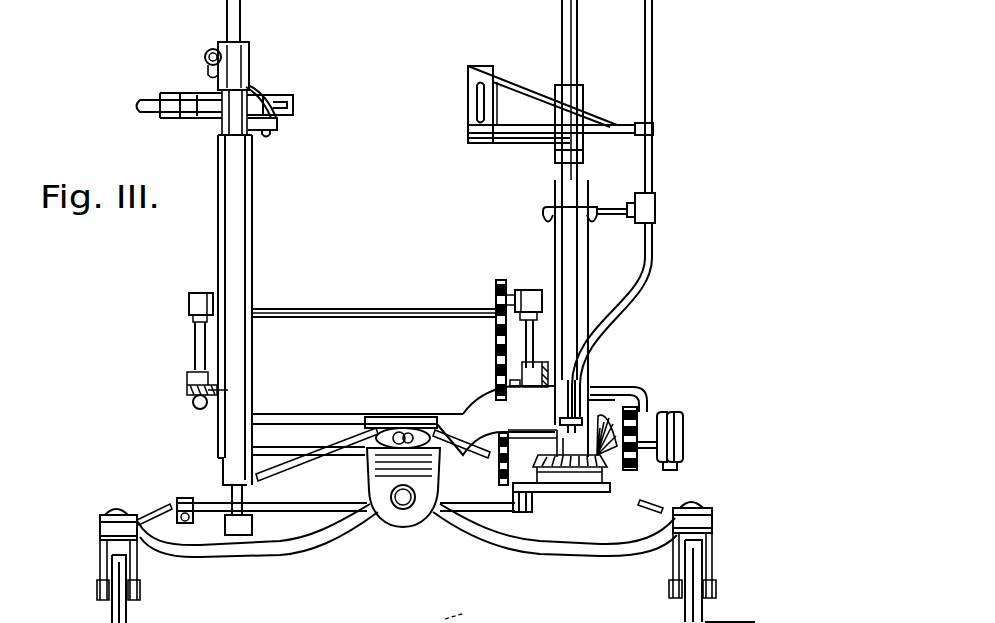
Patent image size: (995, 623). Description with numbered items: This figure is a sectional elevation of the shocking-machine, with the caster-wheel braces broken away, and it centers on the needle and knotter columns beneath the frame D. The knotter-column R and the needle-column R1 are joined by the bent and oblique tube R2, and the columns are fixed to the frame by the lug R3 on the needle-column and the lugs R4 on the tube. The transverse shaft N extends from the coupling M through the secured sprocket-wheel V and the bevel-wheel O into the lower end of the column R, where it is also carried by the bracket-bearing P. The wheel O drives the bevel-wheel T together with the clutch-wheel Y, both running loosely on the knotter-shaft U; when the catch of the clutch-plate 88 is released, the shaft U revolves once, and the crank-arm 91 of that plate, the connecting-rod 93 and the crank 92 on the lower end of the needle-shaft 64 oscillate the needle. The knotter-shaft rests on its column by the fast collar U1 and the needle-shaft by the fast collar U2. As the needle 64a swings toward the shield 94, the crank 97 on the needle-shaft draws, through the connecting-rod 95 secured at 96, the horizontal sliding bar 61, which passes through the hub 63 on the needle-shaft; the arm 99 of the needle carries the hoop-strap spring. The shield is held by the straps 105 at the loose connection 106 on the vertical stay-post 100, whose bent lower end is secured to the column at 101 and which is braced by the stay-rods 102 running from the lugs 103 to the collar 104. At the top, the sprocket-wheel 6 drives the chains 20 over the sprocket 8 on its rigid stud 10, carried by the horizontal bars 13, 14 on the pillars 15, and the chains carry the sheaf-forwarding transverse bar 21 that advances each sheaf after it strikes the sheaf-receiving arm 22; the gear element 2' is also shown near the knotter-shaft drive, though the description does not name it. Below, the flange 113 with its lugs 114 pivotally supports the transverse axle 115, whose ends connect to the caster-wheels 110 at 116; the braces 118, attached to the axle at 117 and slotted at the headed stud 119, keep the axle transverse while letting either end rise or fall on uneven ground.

The needle-column R1 is at (222, 238).
The fast collar U2 is at (221, 144).
The needle-shaft 64 is at (225, 2).
The hub 63 is at (246, 62).
The connection point of connecting-rod to bar 96 is at (205, 57).
The horizontal sliding bar 61 is at (206, 51).
The arm of the needle 99 is at (186, 102).
The needle 64a is at (188, 128).
The crank 97 is at (258, 128).
The connecting-rod 95 is at (256, 100).
The horizontal bar 14 is at (190, 306).
The pillars 15 is at (196, 346).
The frame D is at (190, 384).
The lug R3 is at (194, 404).
The transverse bar 21 is at (328, 312).
The sprocket-chains 20 is at (496, 341).
The sprocket 8 is at (496, 290).
The rigid stud 10 is at (508, 290).
The horizontal bar 13 is at (550, 300).
The knotter-shaft U is at (578, 68).
The knotter-column R is at (583, 262).
The fast collar U1 is at (580, 155).
The shield 94 is at (470, 96).
The straps 105 is at (526, 132).
The connection 106 is at (654, 135).
The vertical stay-post 100 is at (653, 68).
The collar 104 is at (655, 221).
The stay-rods 102 is at (621, 214).
The lugs 103 is at (586, 221).
The bracket-bearing P is at (612, 388).
The bevel-wheel T is at (612, 465).
The coupling M is at (683, 450).
The transverse shaft N is at (604, 425).
The bevel-wheel O is at (616, 409).
The connection of stay-post to column 101 is at (561, 421).
The bevel gear 2' is at (557, 456).
The clutch-plate 88 is at (568, 485).
The clutch-wheel Y is at (600, 488).
The crank-arm 91 is at (536, 506).
The sprocket-wheel 6 is at (498, 486).
The bent and oblique tube R2 is at (340, 424).
The lugs R4 is at (496, 420).
The flange 113 is at (382, 414).
The headed stud 119 is at (402, 436).
The lugs 114 is at (378, 480).
The braces 118 is at (320, 455).
The connecting-rod 93 is at (310, 503).
The crank 92 is at (222, 516).
The sprocket-wheel V is at (641, 472).
The transverse axle 115 is at (268, 553).
The axle-to-caster connection 116 is at (104, 529).
The brace connection 117 is at (137, 530).
The caster-wheels 110 is at (113, 615).
The adjustable sheaf-receiving arm 22 is at (506, 612).